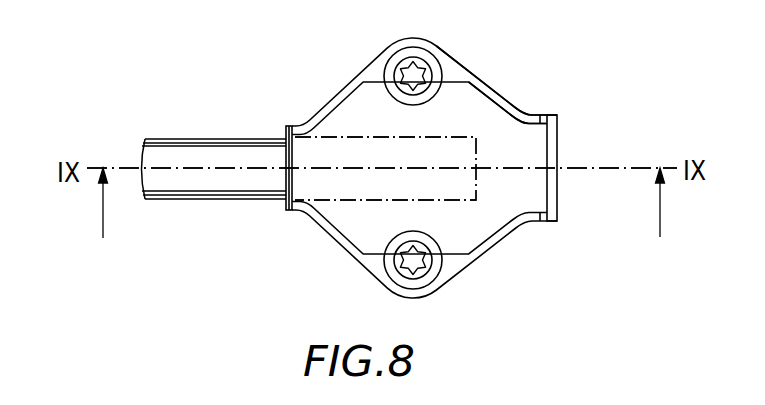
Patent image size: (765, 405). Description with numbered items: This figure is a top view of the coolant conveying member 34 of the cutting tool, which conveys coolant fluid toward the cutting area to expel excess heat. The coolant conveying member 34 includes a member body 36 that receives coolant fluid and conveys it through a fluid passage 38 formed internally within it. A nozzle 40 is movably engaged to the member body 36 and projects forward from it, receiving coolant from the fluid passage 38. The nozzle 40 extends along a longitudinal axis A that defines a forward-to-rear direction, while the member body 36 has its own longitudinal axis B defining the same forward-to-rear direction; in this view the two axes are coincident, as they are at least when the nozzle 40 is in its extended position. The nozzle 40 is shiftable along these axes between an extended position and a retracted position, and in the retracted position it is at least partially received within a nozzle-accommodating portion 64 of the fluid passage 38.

The coolant conveying member 34 is at (322, 242).
The member body 36 is at (457, 112).
The fluid passage 38 is at (373, 152).
The nozzle-accommodating portion 64 is at (373, 152).
The nozzle 40 is at (230, 157).
The longitudinal axis A is at (600, 168).
The longitudinal axis B is at (600, 168).